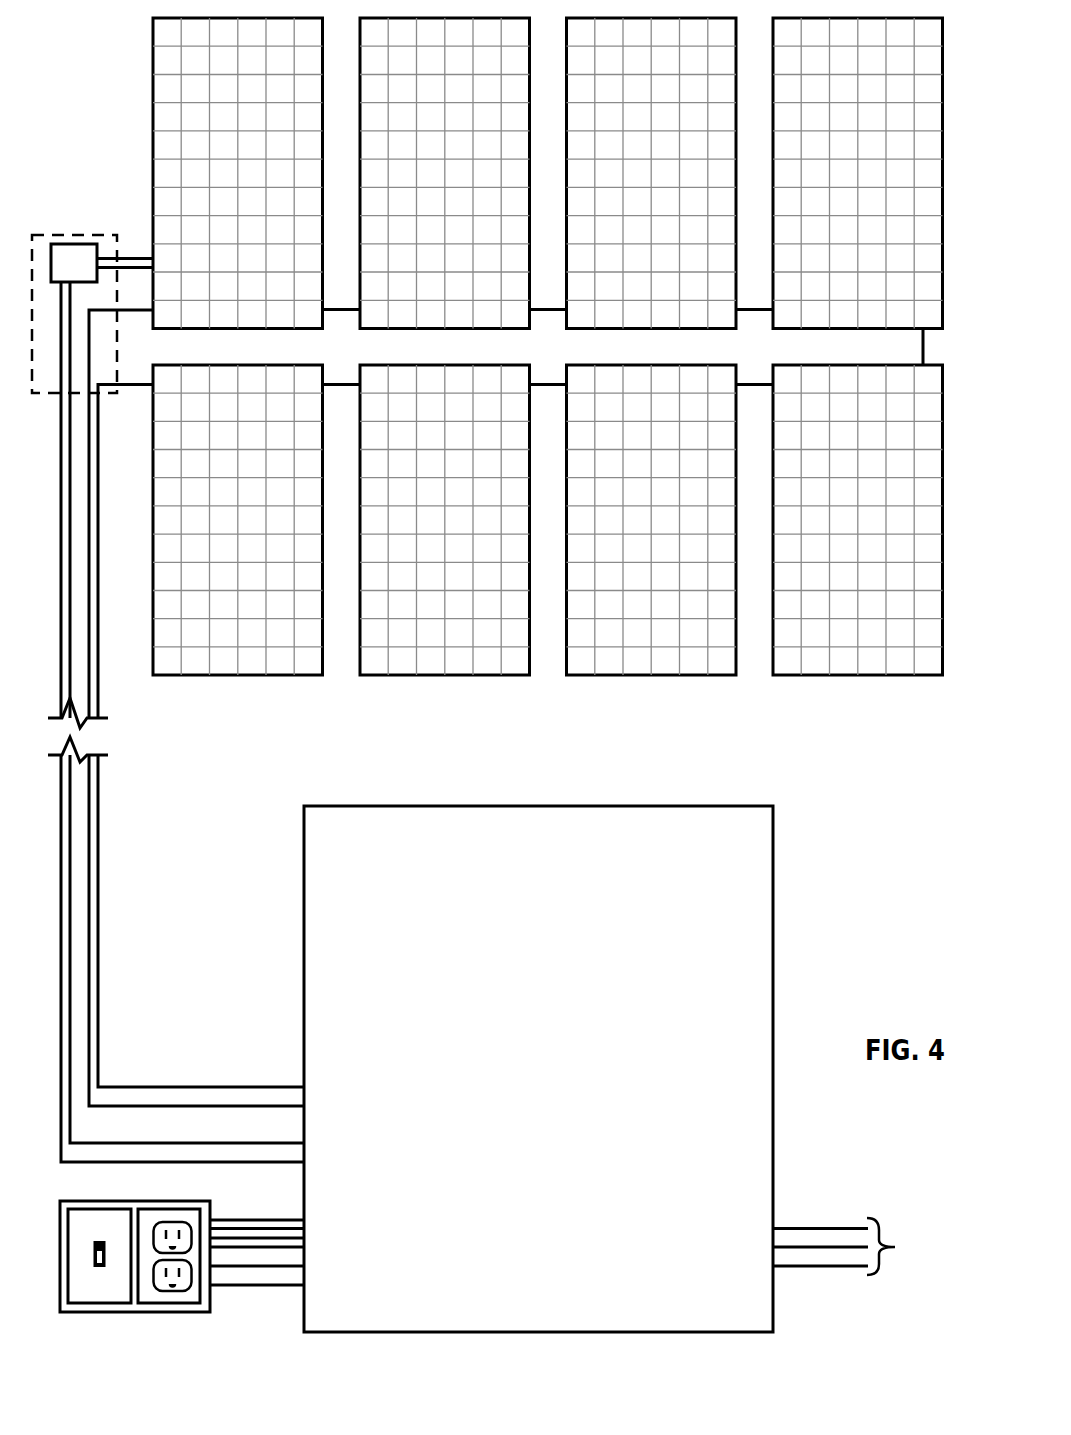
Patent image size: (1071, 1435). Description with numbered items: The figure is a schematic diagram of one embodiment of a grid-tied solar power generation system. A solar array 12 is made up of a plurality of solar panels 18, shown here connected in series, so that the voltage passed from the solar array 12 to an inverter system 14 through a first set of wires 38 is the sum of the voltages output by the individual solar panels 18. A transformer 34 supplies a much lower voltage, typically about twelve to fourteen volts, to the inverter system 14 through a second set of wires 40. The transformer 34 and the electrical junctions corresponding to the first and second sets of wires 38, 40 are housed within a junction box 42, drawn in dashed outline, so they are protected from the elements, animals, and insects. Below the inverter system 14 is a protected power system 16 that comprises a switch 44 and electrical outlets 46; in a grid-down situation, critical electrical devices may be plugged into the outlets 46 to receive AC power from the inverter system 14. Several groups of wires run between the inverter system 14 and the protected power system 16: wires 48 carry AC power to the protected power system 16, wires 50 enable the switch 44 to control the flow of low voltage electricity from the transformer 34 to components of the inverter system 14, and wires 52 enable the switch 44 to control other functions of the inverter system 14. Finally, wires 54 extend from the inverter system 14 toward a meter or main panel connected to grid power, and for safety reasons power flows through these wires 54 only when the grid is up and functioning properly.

The solar array 12 is at (547, 699).
The inverter system 14 is at (525, 1095).
The protected power system 16 is at (135, 1327).
The solar panels 18 is at (398, 676).
The transformer 34 is at (86, 274).
The first set of wires 38 is at (134, 1087).
The second set of wires 40 is at (162, 1162).
The junction box 42 is at (55, 233).
The switch 44 is at (102, 1211).
The electrical outlets 46 is at (177, 1211).
The wires 48 is at (267, 1266).
The wires 50 is at (265, 1220).
The wires 52 is at (265, 1247).
The wires 54 is at (895, 1247).